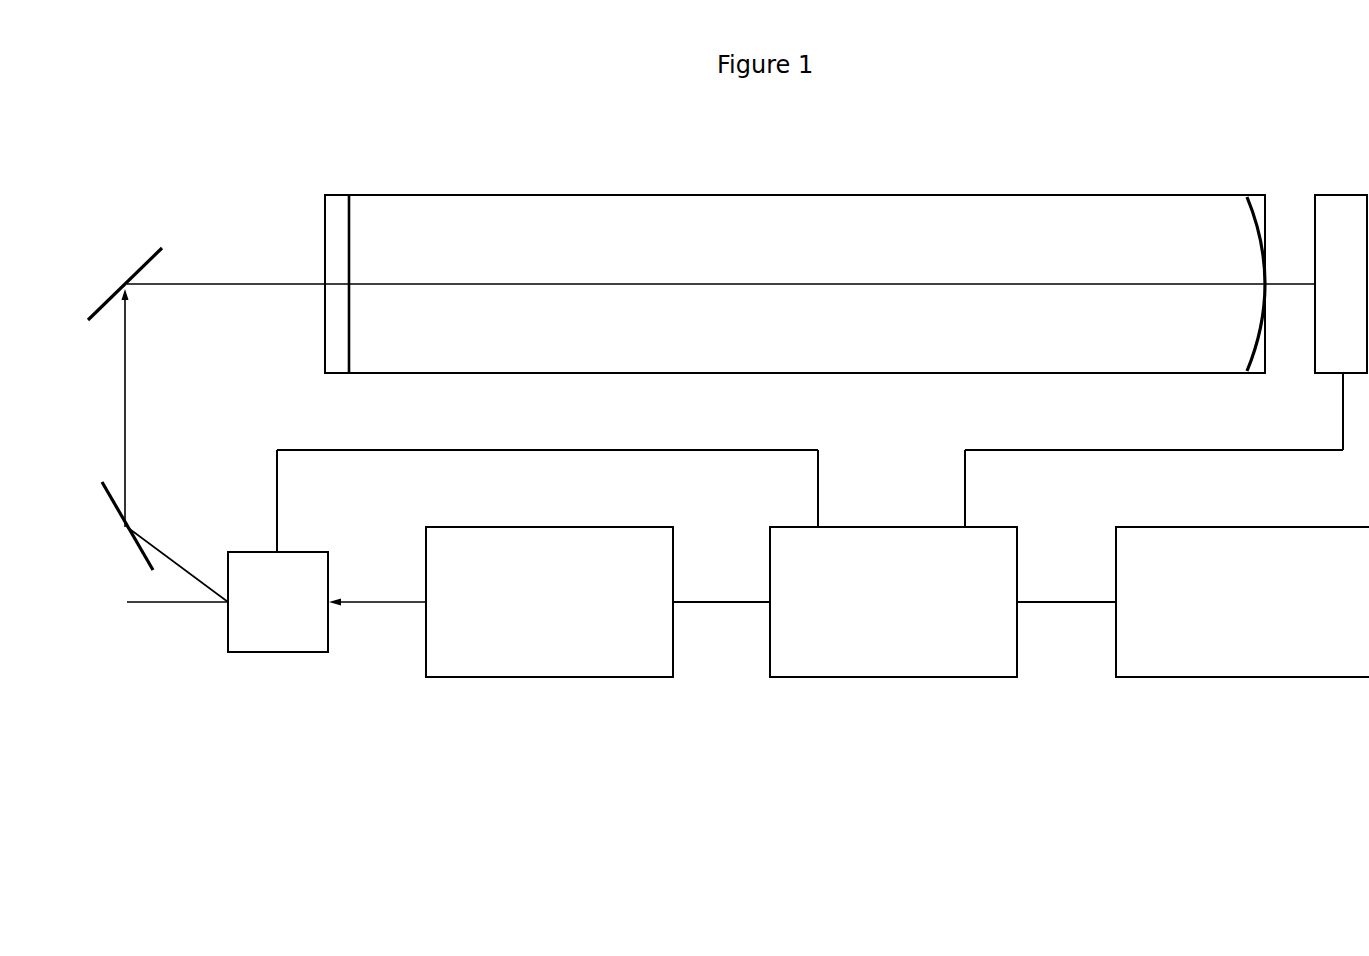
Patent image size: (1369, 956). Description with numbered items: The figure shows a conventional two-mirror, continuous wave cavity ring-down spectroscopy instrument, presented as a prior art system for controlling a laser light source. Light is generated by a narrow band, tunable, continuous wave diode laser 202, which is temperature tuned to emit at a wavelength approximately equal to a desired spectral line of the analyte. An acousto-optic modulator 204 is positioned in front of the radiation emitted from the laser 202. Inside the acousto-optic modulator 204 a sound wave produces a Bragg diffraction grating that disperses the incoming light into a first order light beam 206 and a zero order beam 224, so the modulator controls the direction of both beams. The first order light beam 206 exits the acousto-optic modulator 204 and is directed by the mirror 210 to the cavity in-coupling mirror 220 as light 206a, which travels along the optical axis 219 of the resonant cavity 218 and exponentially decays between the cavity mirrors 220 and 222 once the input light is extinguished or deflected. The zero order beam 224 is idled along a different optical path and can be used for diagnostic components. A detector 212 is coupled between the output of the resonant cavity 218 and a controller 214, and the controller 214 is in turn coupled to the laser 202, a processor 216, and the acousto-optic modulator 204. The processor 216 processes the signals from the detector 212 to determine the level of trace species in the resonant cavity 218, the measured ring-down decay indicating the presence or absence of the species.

The continuous wave diode laser 202 is at (501, 602).
The acousto-optic modulator 204 is at (523, 551).
The first order light beam 206 is at (165, 445).
The light directed to cavity mirror 206a is at (226, 273).
The mirror 210 is at (142, 261).
The detector 212 is at (1341, 284).
The controller 214 is at (1008, 525).
The processor 216 is at (1193, 602).
The resonant cavity 218 is at (795, 272).
The optical axis 219 is at (820, 271).
The cavity in-coupling mirror 220 is at (356, 341).
The cavity mirror 222 is at (1248, 351).
The zero order beam 224 is at (153, 603).